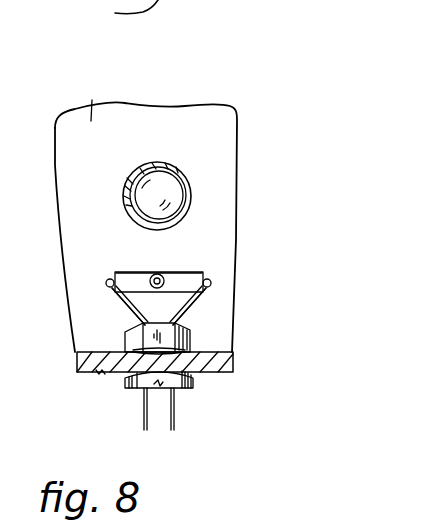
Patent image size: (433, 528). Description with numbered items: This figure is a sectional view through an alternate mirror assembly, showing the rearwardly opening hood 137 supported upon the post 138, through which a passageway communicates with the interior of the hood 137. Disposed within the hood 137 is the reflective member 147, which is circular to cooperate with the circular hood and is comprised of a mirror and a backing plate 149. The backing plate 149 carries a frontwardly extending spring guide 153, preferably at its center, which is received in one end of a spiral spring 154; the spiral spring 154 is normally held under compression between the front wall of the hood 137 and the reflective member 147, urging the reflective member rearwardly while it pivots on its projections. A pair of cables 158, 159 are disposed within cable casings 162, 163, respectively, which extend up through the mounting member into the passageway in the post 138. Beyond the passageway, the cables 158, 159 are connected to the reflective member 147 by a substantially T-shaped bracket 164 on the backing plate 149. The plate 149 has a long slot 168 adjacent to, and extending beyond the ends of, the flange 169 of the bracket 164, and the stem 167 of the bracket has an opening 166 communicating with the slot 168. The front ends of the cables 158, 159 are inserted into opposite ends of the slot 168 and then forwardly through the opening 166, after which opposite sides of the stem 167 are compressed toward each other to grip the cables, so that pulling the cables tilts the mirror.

The hood 137 is at (216, 377).
The post 138 is at (128, 387).
The reflective member 147 is at (193, 99).
The backing plate 149 is at (78, 99).
The spring guide 153 is at (165, 192).
The spiral spring 154 is at (168, 164).
The cable 158 is at (126, 307).
The cable 159 is at (207, 306).
The cable casing 162 is at (142, 414).
The cable casing 163 is at (174, 407).
The T-shaped bracket 164 is at (185, 270).
The opening 166 is at (161, 276).
The stem 167 is at (153, 276).
The slot 168 is at (211, 283).
The flange 169 is at (127, 276).